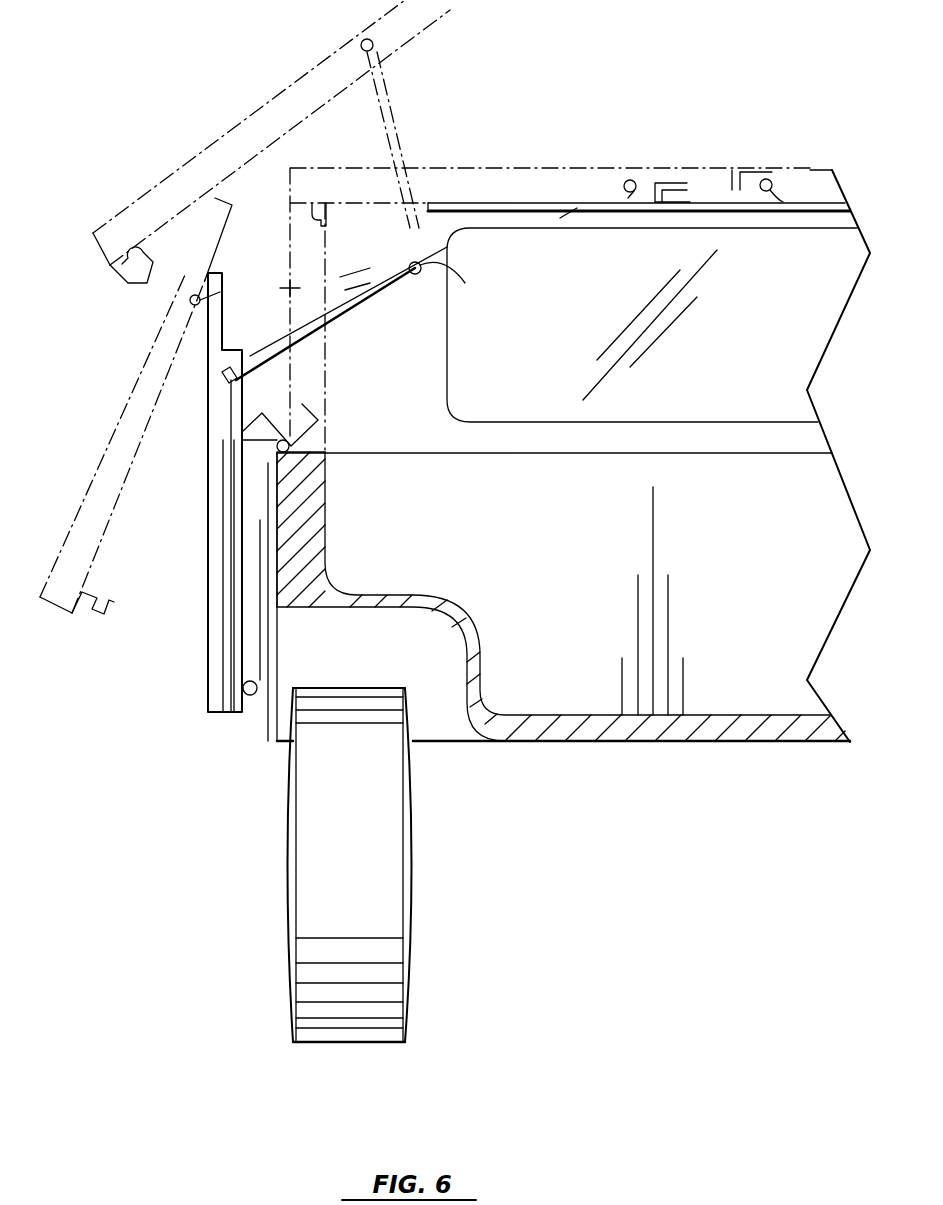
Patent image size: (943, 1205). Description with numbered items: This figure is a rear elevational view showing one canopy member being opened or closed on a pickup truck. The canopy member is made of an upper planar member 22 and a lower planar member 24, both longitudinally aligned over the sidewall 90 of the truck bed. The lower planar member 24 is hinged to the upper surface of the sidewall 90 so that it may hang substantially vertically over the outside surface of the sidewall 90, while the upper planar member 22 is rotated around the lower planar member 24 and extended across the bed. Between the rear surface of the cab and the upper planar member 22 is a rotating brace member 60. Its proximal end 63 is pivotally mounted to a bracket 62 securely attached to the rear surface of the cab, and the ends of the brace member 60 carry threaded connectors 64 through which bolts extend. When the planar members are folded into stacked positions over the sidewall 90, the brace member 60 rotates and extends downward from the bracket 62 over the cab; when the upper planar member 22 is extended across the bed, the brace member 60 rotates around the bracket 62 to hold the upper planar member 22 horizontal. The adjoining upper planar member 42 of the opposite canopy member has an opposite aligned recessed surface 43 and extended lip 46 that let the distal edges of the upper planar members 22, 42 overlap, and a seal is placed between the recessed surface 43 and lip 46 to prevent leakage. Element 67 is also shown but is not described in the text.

The upper planar member 22 is at (297, 85).
The lower planar member 24 is at (147, 283).
The upper planar member 42 is at (778, 172).
The recessed surface 43 is at (700, 190).
The extended lip 46 is at (700, 197).
The brace member 60 is at (383, 87).
The bracket 62 is at (415, 278).
The proximal end 63 is at (465, 283).
The threaded connector 64 is at (397, 44).
The mounting flange 67 is at (560, 207).
The sidewall 90 is at (313, 537).